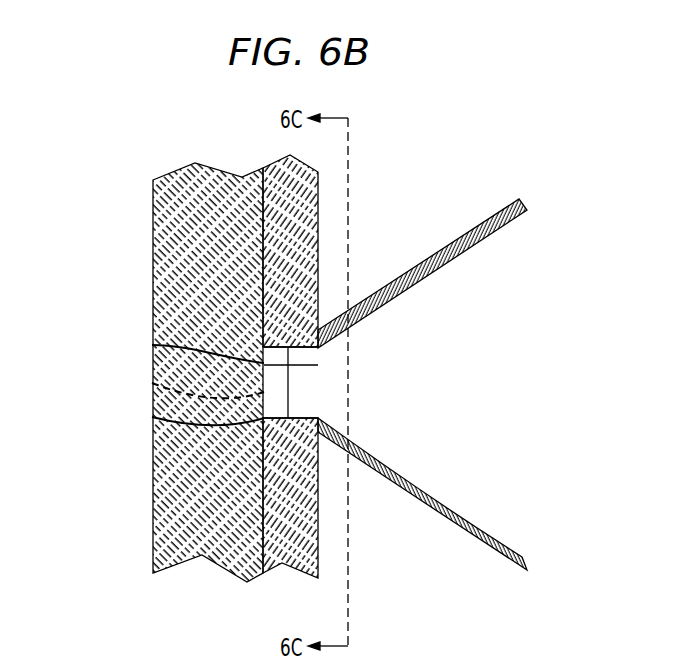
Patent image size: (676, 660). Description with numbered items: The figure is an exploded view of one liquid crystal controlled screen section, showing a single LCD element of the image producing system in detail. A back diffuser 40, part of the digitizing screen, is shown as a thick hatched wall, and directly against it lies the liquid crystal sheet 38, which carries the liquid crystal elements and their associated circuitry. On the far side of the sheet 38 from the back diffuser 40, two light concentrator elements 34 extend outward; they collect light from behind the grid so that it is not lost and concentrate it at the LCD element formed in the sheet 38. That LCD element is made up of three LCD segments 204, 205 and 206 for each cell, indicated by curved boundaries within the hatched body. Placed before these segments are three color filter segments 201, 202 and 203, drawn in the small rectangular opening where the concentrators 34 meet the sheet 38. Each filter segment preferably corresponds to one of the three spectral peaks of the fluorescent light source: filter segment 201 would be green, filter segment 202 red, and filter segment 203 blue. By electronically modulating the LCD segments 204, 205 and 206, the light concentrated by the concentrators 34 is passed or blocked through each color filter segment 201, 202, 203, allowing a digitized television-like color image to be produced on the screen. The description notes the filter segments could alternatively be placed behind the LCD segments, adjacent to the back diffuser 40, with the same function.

The light concentrator element 34 is at (463, 247).
The liquid crystal sheet 38 is at (283, 566).
The back diffuser 40 is at (153, 252).
The color filter segment 201 is at (318, 412).
The color filter segment 202 is at (318, 354).
The color filter segment 203 is at (310, 387).
The LCD segment 204 is at (152, 417).
The LCD segment 205 is at (152, 345).
The LCD segment 206 is at (152, 383).